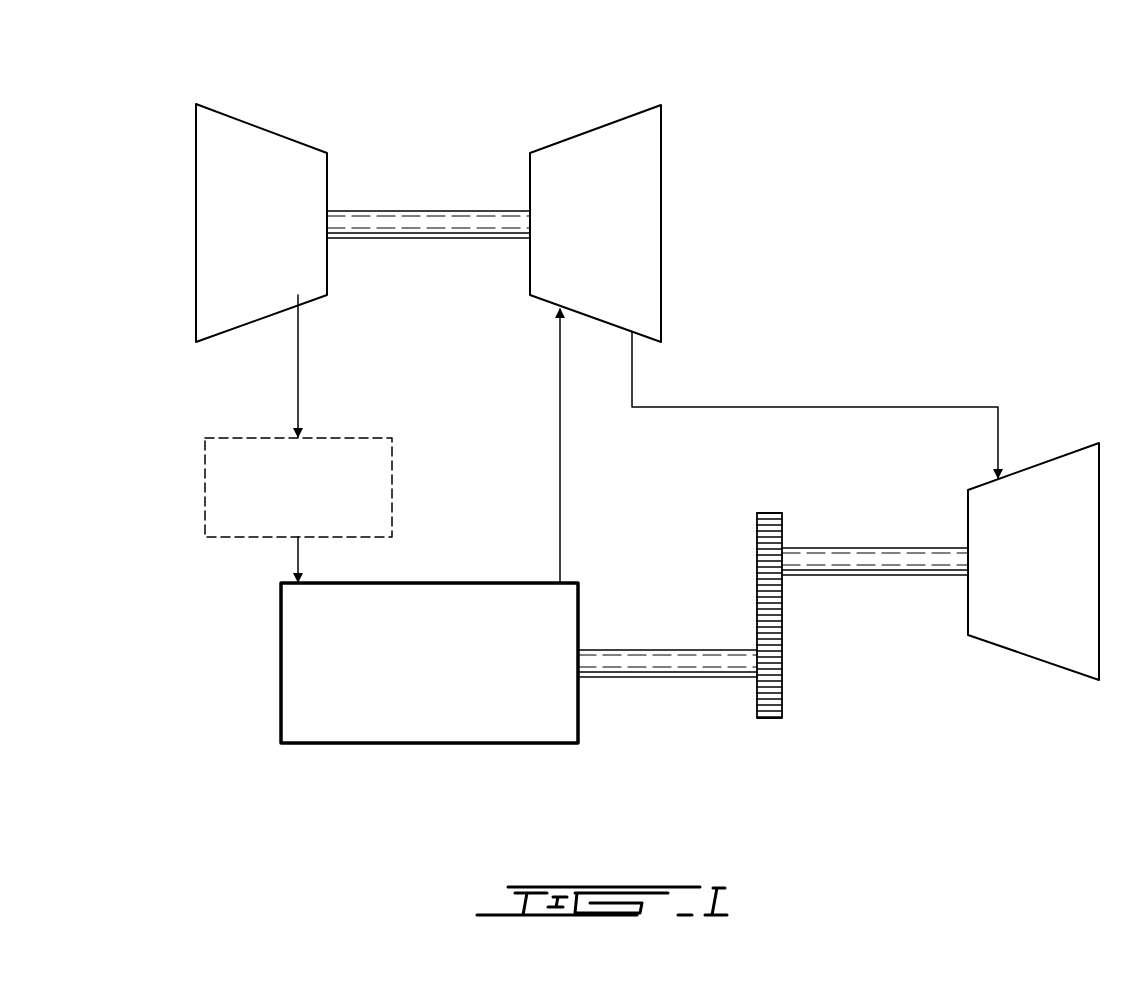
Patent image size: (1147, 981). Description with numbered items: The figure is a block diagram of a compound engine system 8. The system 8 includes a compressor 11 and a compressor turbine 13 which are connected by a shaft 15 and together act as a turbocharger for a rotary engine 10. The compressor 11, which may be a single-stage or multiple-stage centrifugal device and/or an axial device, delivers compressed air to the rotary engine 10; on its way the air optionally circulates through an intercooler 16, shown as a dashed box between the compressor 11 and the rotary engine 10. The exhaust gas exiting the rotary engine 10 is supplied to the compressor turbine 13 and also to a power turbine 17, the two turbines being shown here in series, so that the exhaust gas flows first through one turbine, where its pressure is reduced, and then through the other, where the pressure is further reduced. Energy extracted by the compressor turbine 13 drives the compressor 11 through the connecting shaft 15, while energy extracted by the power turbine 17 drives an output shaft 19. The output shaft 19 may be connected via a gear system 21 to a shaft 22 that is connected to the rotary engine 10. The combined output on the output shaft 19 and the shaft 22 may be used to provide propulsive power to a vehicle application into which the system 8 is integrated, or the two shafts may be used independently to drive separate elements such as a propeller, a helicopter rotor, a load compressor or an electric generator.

The compound engine system 8 is at (855, 215).
The rotary engine 10 is at (545, 716).
The compressor 11 is at (258, 157).
The compressor turbine 13 is at (578, 157).
The shaft 15 is at (412, 222).
The intercooler 16 is at (226, 490).
The power turbine 17 is at (1060, 483).
The output shaft 19 is at (877, 560).
The gear system 21 is at (770, 727).
The shaft 22 is at (664, 662).